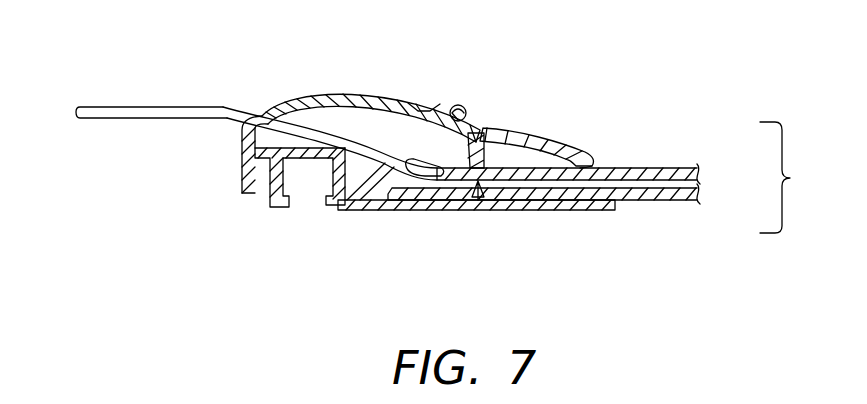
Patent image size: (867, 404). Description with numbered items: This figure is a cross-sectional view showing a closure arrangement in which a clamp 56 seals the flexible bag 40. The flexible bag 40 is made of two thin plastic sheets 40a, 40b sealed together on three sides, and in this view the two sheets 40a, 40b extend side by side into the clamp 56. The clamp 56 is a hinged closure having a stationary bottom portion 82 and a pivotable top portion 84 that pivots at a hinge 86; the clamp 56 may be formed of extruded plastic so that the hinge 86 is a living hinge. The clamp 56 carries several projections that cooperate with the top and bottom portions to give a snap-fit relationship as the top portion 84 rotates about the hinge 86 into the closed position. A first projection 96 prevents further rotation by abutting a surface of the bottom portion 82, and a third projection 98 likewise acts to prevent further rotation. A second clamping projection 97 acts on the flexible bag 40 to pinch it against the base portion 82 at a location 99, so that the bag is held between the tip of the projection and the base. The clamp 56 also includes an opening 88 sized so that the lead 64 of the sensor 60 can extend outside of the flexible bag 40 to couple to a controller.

The clamp 56 is at (557, 53).
The lead 64 is at (108, 107).
The opening 88 is at (253, 110).
The bottom portion 82 is at (323, 93).
The sensor 60 is at (343, 200).
The first projection 96 is at (407, 103).
The hinge 86 is at (463, 110).
The second clamping projection 97 is at (512, 128).
The top portion 84 is at (565, 128).
The third projection 98 is at (605, 163).
The thin plastic sheet 40a is at (665, 160).
The thin plastic sheet 40b is at (677, 200).
The flexible bag 40 is at (802, 177).
The location 99 is at (477, 190).